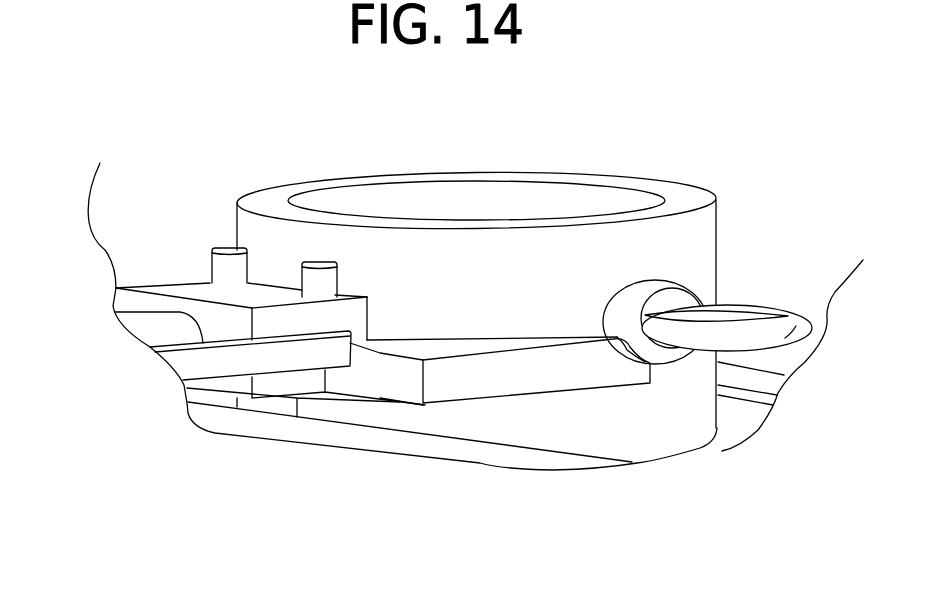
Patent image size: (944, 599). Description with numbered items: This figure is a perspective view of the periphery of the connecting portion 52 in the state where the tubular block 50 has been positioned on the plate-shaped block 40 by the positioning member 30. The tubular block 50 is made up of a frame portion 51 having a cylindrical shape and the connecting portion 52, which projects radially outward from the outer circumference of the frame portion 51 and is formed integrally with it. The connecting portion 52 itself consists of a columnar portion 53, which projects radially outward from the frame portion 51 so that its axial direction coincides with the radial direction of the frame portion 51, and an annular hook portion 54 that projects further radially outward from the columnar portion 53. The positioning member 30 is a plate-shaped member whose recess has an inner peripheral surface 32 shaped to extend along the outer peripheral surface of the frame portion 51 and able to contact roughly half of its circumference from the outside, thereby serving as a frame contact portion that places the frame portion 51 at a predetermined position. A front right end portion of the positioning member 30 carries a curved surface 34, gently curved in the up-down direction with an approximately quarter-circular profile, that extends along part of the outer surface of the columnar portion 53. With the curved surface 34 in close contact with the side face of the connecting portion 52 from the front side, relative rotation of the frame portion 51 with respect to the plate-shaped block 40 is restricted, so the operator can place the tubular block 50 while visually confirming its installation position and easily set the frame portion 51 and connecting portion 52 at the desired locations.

The positioning member 30 is at (392, 383).
The inner peripheral surface 32 is at (492, 340).
The curved surface 34 is at (650, 363).
The plate-shaped block 40 is at (733, 433).
The tubular block 50 is at (477, 253).
The frame portion 51 is at (662, 190).
The connecting portion 52 is at (728, 276).
The columnar portion 53 is at (656, 283).
The annular hook portion 54 is at (812, 326).